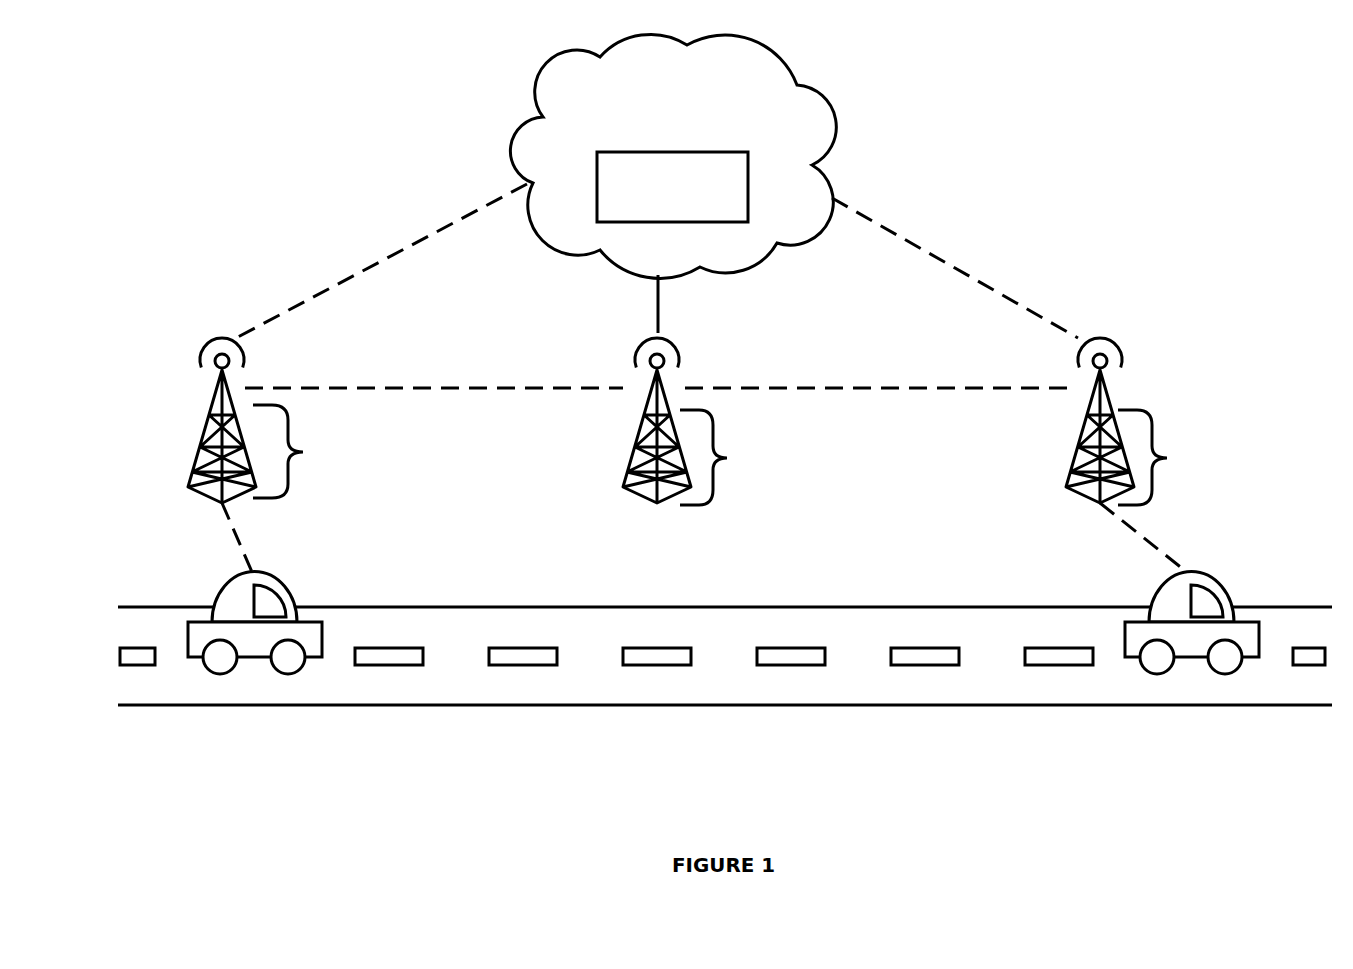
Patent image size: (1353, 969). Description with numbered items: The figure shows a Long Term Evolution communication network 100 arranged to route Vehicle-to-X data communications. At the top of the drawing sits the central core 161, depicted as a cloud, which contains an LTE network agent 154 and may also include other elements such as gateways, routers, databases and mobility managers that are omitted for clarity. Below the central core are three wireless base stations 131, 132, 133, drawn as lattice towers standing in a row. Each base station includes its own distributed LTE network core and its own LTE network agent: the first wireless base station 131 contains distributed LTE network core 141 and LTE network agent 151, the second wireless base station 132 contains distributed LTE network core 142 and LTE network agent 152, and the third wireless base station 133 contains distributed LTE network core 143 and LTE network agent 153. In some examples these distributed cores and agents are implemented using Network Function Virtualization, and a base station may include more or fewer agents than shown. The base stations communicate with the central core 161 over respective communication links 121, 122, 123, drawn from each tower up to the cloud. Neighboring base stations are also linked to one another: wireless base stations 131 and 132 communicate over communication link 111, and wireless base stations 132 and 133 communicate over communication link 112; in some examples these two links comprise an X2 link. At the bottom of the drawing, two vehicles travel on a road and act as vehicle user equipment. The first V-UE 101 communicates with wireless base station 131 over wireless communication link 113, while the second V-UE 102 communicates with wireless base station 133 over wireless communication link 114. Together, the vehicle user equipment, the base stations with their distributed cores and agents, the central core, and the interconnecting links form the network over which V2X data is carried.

The LTE communication network 100 is at (1172, 104).
The vehicle User Equipment 101 is at (238, 572).
The vehicle User Equipment 102 is at (1160, 587).
The communication link 111 is at (455, 388).
The communication link 112 is at (898, 388).
The wireless communication link 113 is at (240, 542).
The wireless communication link 114 is at (1155, 549).
The communication link 121 is at (418, 238).
The communication link 122 is at (656, 306).
The communication link 123 is at (975, 280).
The wireless base station 131 is at (205, 433).
The wireless base station 132 is at (641, 434).
The wireless base station 133 is at (1083, 435).
The distributed LTE network core 141 is at (352, 451).
The distributed LTE network core 142 is at (779, 457).
The distributed LTE network core 143 is at (1216, 457).
The LTE network agent 151 is at (381, 462).
The LTE network agent 152 is at (808, 472).
The LTE network agent 153 is at (1244, 471).
The LTE network agent 154 is at (672, 187).
The central core 161 is at (673, 156).